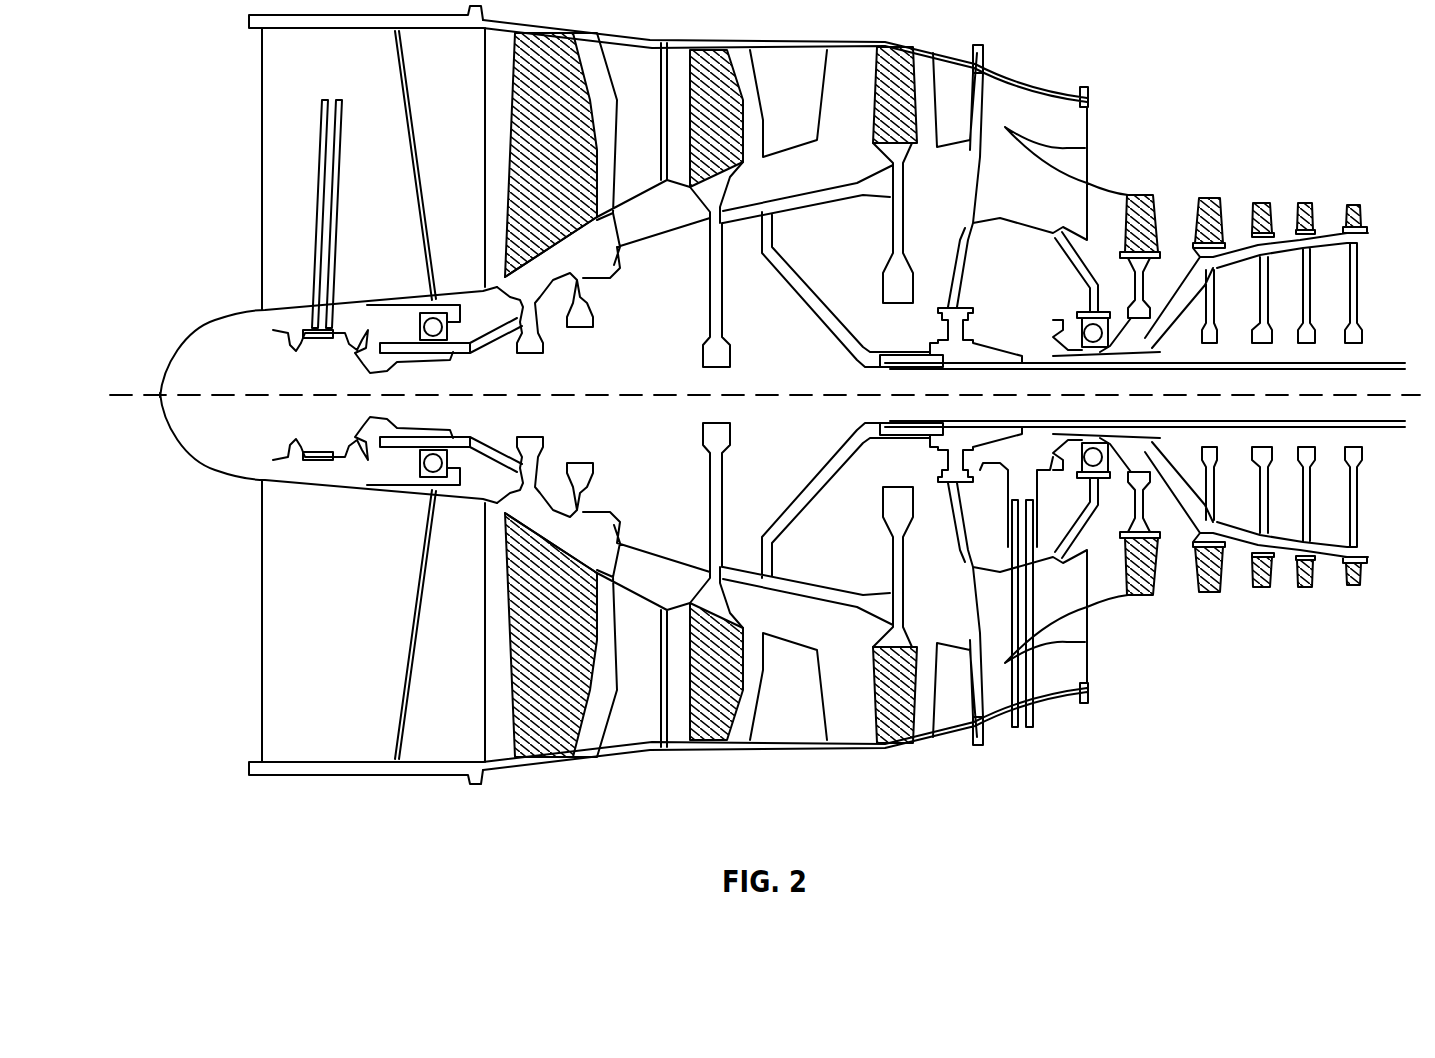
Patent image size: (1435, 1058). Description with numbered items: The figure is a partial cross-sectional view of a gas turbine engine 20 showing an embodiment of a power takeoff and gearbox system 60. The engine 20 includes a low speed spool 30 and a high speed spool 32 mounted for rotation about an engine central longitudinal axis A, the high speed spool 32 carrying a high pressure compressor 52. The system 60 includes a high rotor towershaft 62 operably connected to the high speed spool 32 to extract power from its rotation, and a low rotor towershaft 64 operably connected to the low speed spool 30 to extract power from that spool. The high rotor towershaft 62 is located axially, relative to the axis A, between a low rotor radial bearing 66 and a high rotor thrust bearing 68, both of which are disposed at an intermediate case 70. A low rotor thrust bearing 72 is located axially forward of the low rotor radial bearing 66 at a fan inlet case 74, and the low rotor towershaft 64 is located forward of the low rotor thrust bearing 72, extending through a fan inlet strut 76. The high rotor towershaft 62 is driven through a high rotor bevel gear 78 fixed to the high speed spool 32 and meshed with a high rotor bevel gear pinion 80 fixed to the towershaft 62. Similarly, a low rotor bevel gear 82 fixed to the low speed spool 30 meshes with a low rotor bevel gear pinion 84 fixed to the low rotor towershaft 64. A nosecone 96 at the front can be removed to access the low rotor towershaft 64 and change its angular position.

The gas turbine engine 20 is at (172, 210).
The low speed spool 30 is at (665, 366).
The high speed spool 32 is at (1248, 311).
The high pressure compressor 52 is at (1211, 192).
The power takeoff and gearbox system 60 is at (630, 788).
The high rotor towershaft 62 is at (1037, 672).
The low rotor towershaft 64 is at (315, 182).
The low rotor radial bearing 66 is at (934, 456).
The high rotor thrust bearing 68 is at (1098, 335).
The intermediate case 70 is at (986, 690).
The low rotor thrust bearing 72 is at (450, 460).
The fan inlet case 74 is at (350, 742).
The fan inlet strut 76 is at (396, 241).
The high rotor bevel gear 78 is at (1055, 445).
The high rotor bevel gear pinion 80 is at (1056, 480).
The low rotor bevel gear 82 is at (352, 465).
The low rotor bevel gear pinion 84 is at (272, 320).
The nosecone 96 is at (180, 353).
The engine central longitudinal axis A is at (287, 394).